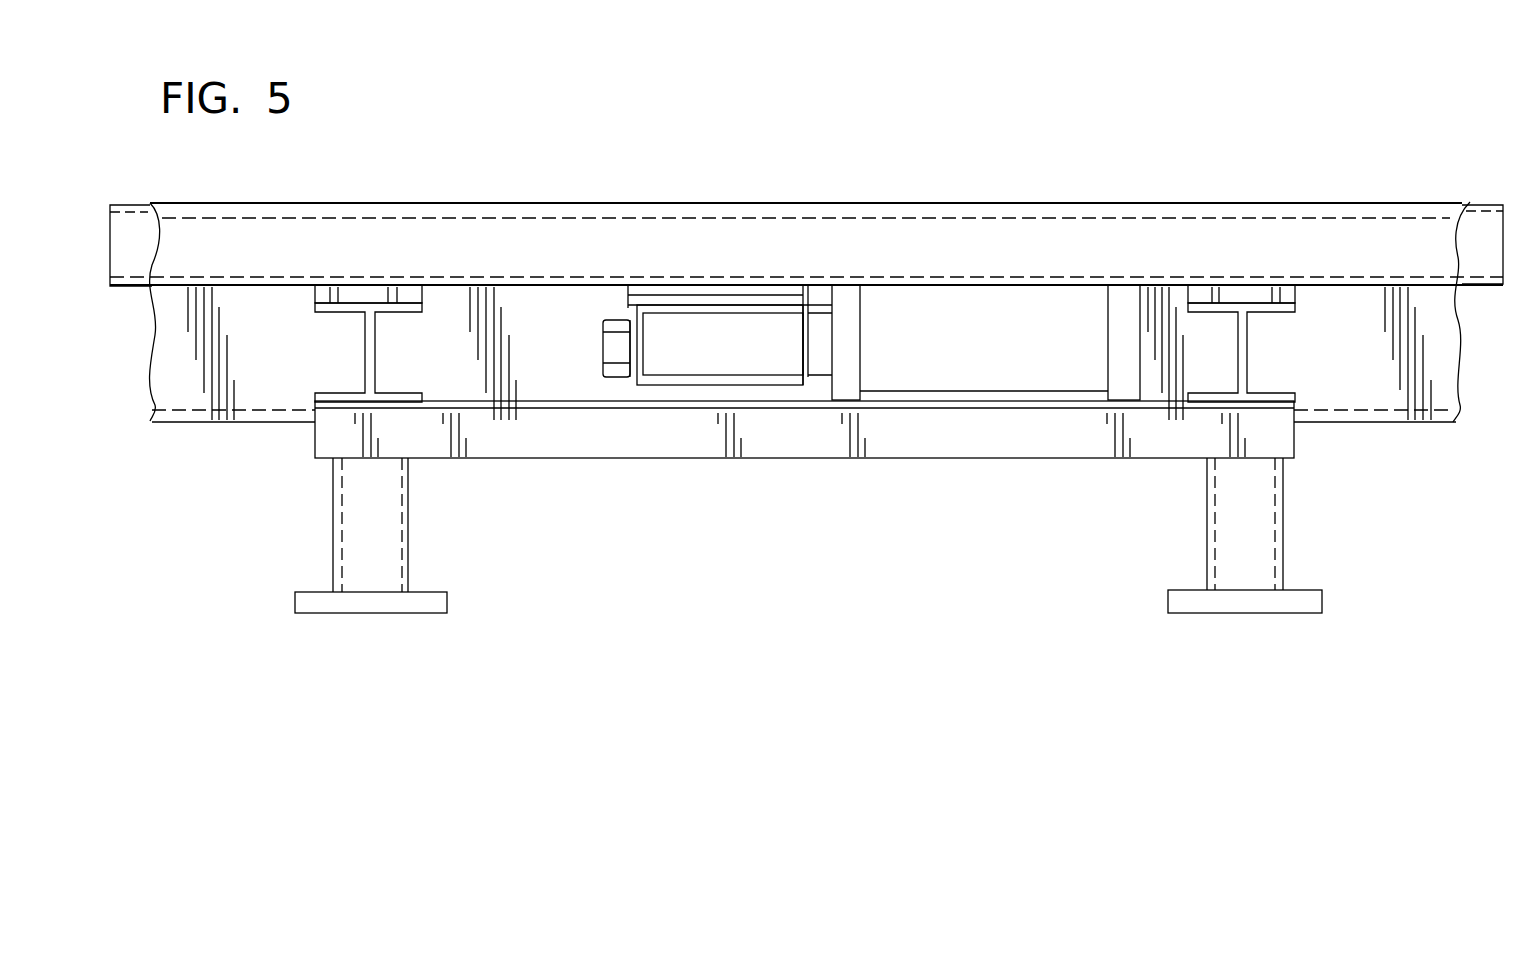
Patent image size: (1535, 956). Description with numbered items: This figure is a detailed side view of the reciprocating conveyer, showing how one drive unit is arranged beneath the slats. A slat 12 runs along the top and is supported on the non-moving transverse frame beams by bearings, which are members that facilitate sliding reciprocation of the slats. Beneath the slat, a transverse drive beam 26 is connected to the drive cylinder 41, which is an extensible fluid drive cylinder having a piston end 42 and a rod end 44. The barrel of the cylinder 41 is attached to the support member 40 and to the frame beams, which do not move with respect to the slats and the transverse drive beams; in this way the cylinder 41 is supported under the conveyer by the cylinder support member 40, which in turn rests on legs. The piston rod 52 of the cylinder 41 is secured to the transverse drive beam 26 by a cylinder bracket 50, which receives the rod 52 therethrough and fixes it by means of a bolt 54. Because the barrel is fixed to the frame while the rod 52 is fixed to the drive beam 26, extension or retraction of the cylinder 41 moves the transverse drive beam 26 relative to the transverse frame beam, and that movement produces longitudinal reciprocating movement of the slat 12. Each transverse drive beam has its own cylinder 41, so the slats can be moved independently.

The slat 12 is at (800, 228).
The transverse drive beam 26 is at (702, 290).
The support member 40 is at (1287, 438).
The drive cylinder 41 is at (940, 383).
The piston end 42 is at (1105, 383).
The rod end 44 is at (860, 382).
The cylinder bracket 50 is at (695, 382).
The piston rod 52 is at (823, 368).
The bolt 54 is at (613, 368).